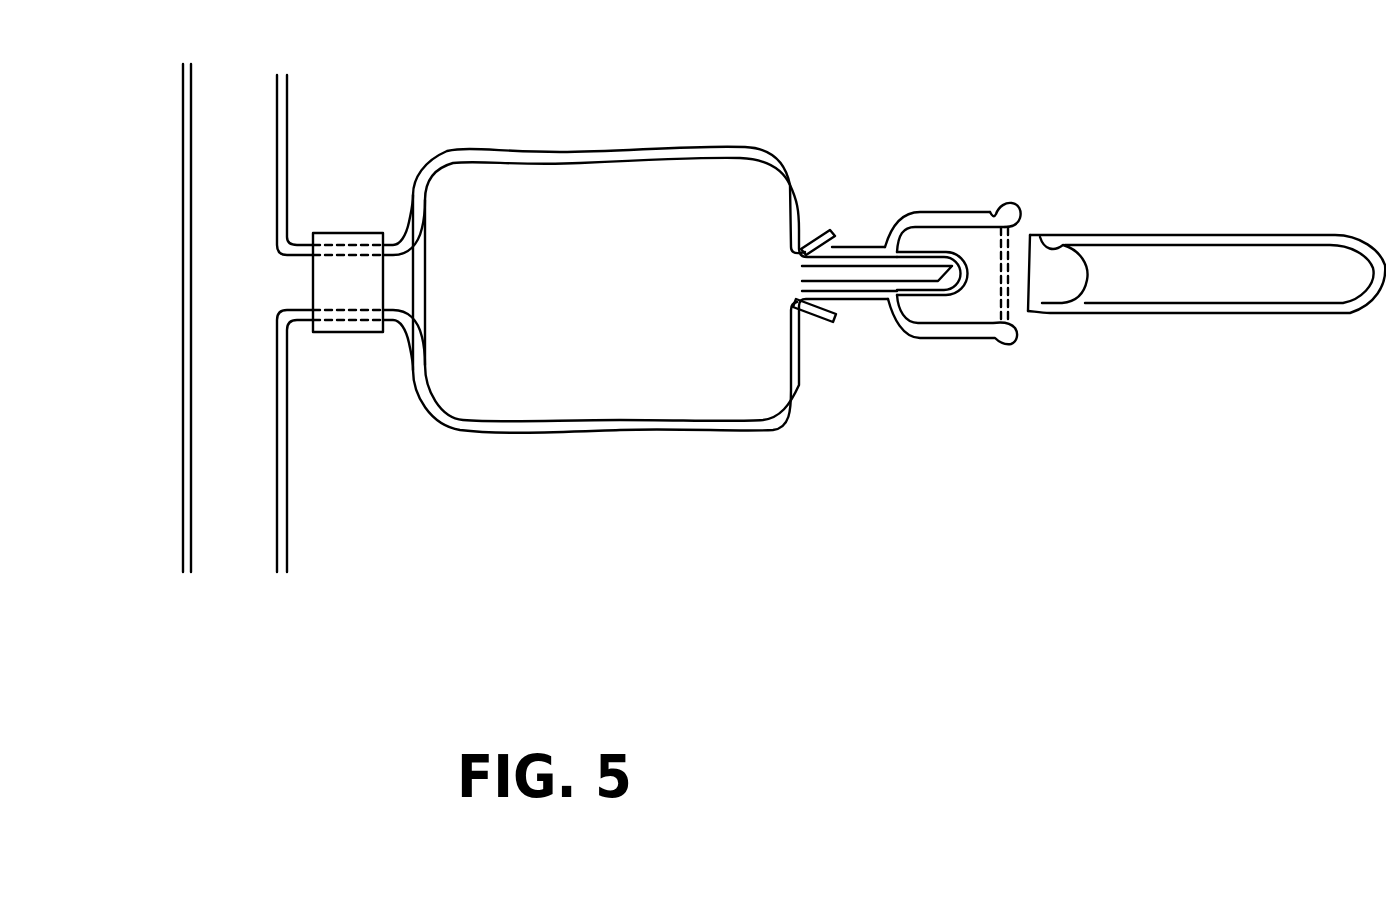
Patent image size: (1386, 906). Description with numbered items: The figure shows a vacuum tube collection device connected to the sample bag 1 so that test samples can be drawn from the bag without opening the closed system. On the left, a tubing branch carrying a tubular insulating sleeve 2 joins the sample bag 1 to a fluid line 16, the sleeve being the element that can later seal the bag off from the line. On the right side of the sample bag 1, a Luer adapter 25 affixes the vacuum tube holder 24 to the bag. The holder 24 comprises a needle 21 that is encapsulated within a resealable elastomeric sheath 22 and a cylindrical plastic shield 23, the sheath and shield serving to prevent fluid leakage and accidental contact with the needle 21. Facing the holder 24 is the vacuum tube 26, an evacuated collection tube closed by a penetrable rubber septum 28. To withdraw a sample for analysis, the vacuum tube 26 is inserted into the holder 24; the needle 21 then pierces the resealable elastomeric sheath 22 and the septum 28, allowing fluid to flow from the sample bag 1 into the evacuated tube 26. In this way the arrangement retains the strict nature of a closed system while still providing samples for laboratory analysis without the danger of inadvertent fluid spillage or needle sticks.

The sample bag 1 is at (541, 387).
The tubular insulating sleeve 2 is at (351, 287).
The fluid line 16 is at (232, 342).
The needle 21 is at (905, 273).
The resealable elastomeric sheath 22 is at (953, 232).
The cylindrical plastic shield 23 is at (987, 216).
The vacuum tube holder 24 is at (942, 188).
The Luer adapter 25 is at (852, 220).
The vacuum tube 26 is at (1206, 188).
The penetrable rubber septum 28 is at (1050, 267).